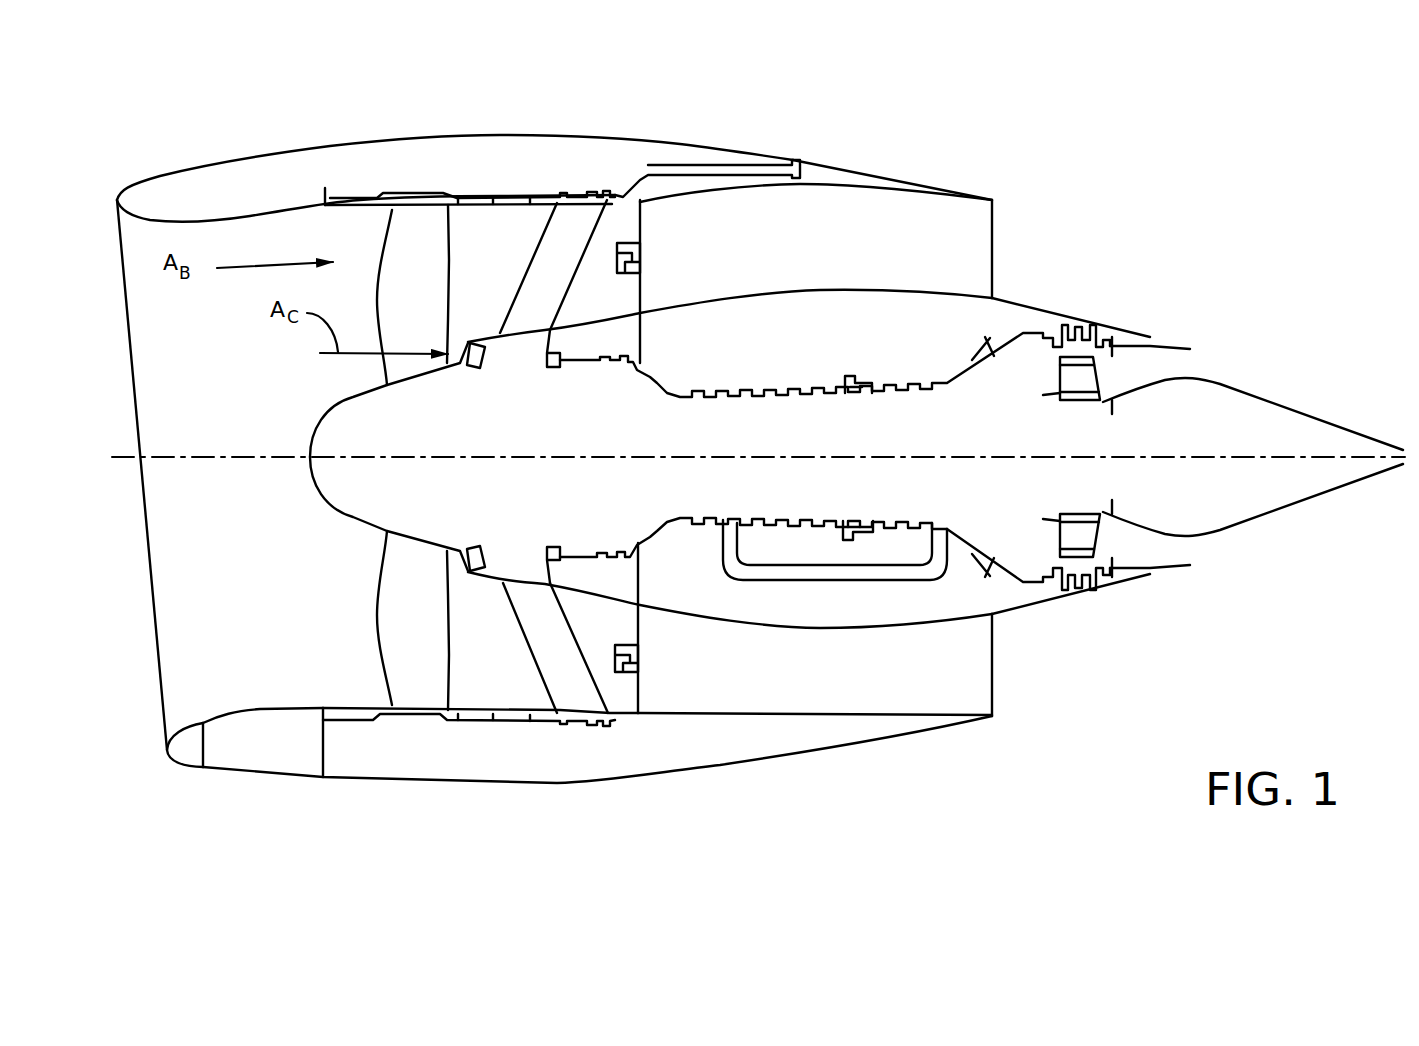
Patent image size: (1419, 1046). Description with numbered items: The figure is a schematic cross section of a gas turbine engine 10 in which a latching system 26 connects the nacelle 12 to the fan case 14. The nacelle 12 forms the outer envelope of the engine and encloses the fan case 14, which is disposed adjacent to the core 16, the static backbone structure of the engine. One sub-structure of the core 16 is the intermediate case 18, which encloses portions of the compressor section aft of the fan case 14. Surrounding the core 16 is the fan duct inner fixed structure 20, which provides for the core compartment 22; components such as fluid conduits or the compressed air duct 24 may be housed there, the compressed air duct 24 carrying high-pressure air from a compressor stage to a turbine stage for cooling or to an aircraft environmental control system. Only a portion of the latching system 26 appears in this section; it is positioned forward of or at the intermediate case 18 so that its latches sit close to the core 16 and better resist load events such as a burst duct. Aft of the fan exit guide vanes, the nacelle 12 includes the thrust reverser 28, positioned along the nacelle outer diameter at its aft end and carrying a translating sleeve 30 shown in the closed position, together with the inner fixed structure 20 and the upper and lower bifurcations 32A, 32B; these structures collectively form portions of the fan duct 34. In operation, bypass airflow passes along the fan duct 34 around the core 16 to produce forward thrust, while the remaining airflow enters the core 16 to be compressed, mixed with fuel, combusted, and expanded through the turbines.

The gas turbine engine 10 is at (1040, 158).
The nacelle 12 is at (314, 128).
The fan case 14 is at (480, 722).
The core 16 is at (834, 392).
The intermediate case 18 is at (670, 531).
The fan duct inner fixed structure 20 is at (767, 292).
The core compartment 22 is at (874, 604).
The compressed air duct 24 is at (950, 575).
The latching system 26 is at (655, 237).
The thrust reverser 28 is at (760, 136).
The translating sleeve 30 is at (827, 167).
The upper bifurcation 32A is at (914, 252).
The lower bifurcation 32B is at (875, 694).
The fan duct 34 is at (828, 249).